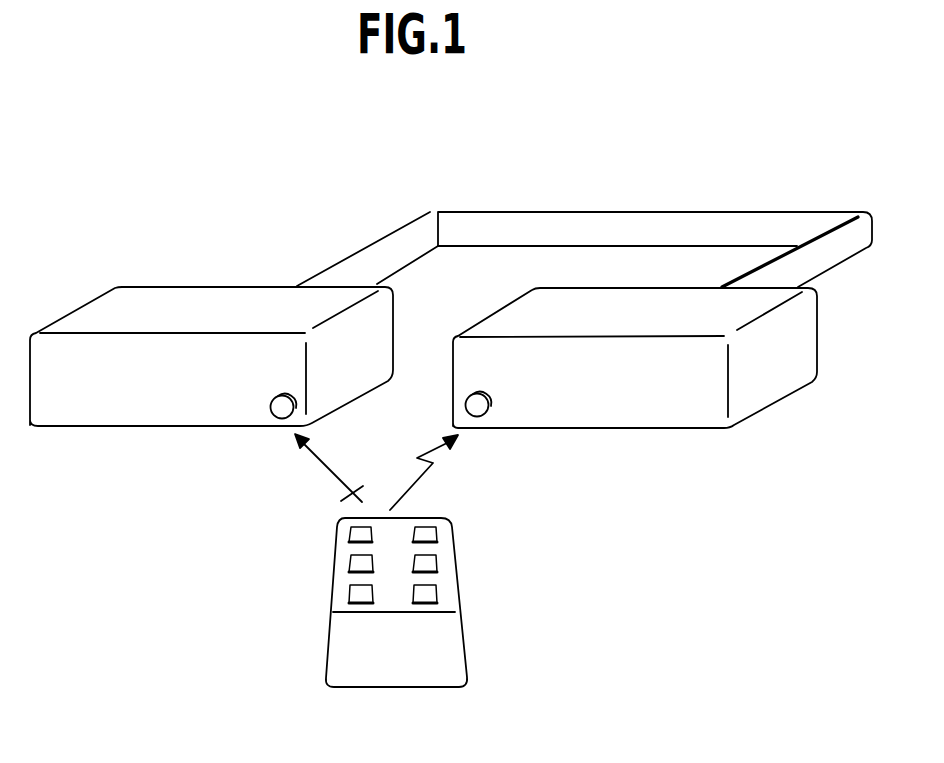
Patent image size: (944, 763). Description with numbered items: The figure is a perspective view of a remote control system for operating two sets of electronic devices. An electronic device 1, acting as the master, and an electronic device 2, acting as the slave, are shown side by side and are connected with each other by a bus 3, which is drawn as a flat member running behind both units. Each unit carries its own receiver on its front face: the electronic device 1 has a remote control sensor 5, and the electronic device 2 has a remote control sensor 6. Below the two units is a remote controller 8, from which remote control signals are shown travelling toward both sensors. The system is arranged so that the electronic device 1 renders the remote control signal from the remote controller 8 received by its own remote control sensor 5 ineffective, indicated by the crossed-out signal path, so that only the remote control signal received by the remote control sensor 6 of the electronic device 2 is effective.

The electronic device (master) 1 is at (241, 287).
The electronic device (slave) 2 is at (813, 342).
The bus 3 is at (572, 212).
The remote control sensor 5 is at (280, 409).
The remote control sensor 6 is at (477, 407).
The remote controller 8 is at (458, 570).